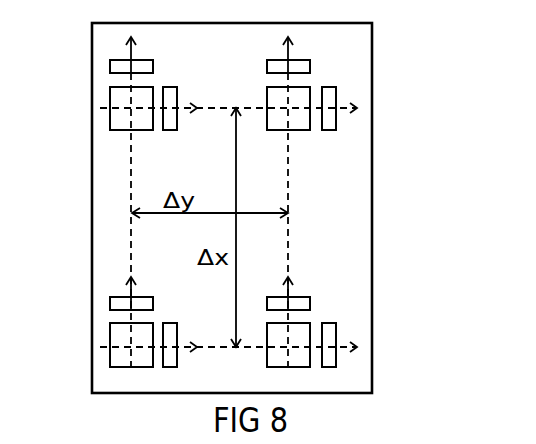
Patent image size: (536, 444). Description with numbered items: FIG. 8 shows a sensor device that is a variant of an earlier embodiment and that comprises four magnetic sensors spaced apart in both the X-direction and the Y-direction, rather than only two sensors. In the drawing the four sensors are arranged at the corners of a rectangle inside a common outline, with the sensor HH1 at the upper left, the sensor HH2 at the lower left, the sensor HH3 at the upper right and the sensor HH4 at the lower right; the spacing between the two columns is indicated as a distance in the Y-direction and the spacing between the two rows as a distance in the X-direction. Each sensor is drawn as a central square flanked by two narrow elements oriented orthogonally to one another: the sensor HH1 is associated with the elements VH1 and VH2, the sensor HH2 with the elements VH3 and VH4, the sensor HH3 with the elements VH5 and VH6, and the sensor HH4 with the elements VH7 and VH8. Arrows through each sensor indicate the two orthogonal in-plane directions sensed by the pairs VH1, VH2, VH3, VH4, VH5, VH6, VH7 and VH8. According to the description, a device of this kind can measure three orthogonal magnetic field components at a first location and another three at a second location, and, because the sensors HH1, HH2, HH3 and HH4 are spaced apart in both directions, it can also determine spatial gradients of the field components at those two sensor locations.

The first Hall sensor unit HH1 is at (118, 92).
The second Hall sensor unit HH2 is at (118, 328).
The third Hall sensor unit HH3 is at (302, 90).
The fourth Hall sensor unit HH4 is at (300, 333).
The first vertical Hall element VH1 is at (153, 52).
The second vertical Hall element VH2 is at (170, 126).
The third vertical Hall element VH3 is at (153, 290).
The fourth vertical Hall element VH4 is at (170, 358).
The fifth vertical Hall element VH5 is at (312, 52).
The sixth vertical Hall element VH6 is at (330, 126).
The seventh vertical Hall element VH7 is at (311, 290).
The eighth vertical Hall element VH8 is at (329, 358).